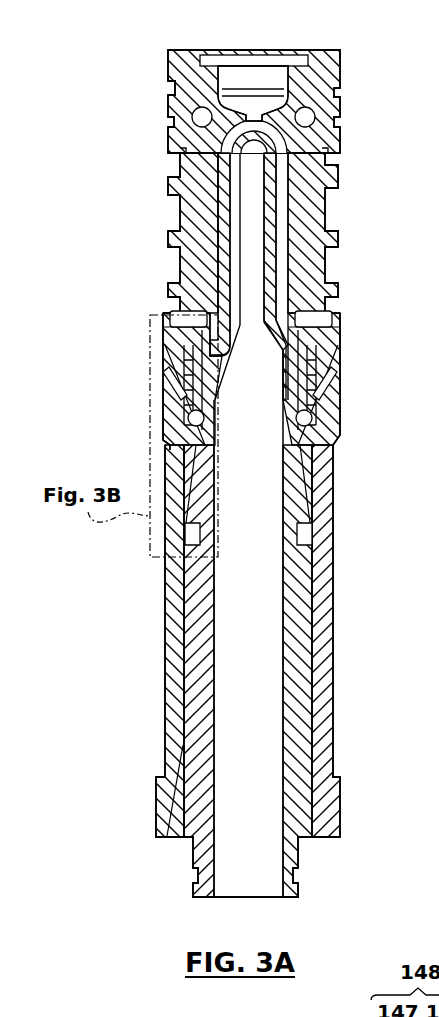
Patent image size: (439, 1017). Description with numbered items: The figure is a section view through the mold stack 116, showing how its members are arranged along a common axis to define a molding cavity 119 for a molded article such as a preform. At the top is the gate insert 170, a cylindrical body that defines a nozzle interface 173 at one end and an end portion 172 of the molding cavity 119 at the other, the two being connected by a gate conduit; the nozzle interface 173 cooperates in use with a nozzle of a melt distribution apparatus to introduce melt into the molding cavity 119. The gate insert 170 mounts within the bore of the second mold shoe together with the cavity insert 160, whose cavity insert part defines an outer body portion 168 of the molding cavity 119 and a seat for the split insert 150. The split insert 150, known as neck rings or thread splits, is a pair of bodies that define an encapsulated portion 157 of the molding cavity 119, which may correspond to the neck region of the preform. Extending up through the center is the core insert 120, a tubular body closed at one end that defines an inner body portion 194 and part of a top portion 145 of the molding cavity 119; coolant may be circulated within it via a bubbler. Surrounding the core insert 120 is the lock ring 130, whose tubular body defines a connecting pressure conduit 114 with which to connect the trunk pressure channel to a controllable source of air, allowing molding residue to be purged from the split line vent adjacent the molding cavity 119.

The mold stack 116 is at (402, 30).
The gate insert 170 is at (343, 97).
The nozzle interface 173 is at (229, 85).
The cavity insert 160 is at (337, 166).
The end portion 172 is at (240, 172).
The split insert 150 is at (342, 401).
The molding cavity 119 is at (83, 252).
The outer body portion 168 is at (205, 318).
The inner body portion 194 is at (186, 368).
The encapsulated portion 157 is at (183, 398).
The top portion 145 is at (188, 423).
The lock ring 130 is at (318, 655).
The core insert 120 is at (302, 734).
The connecting pressure conduit 114 is at (170, 833).